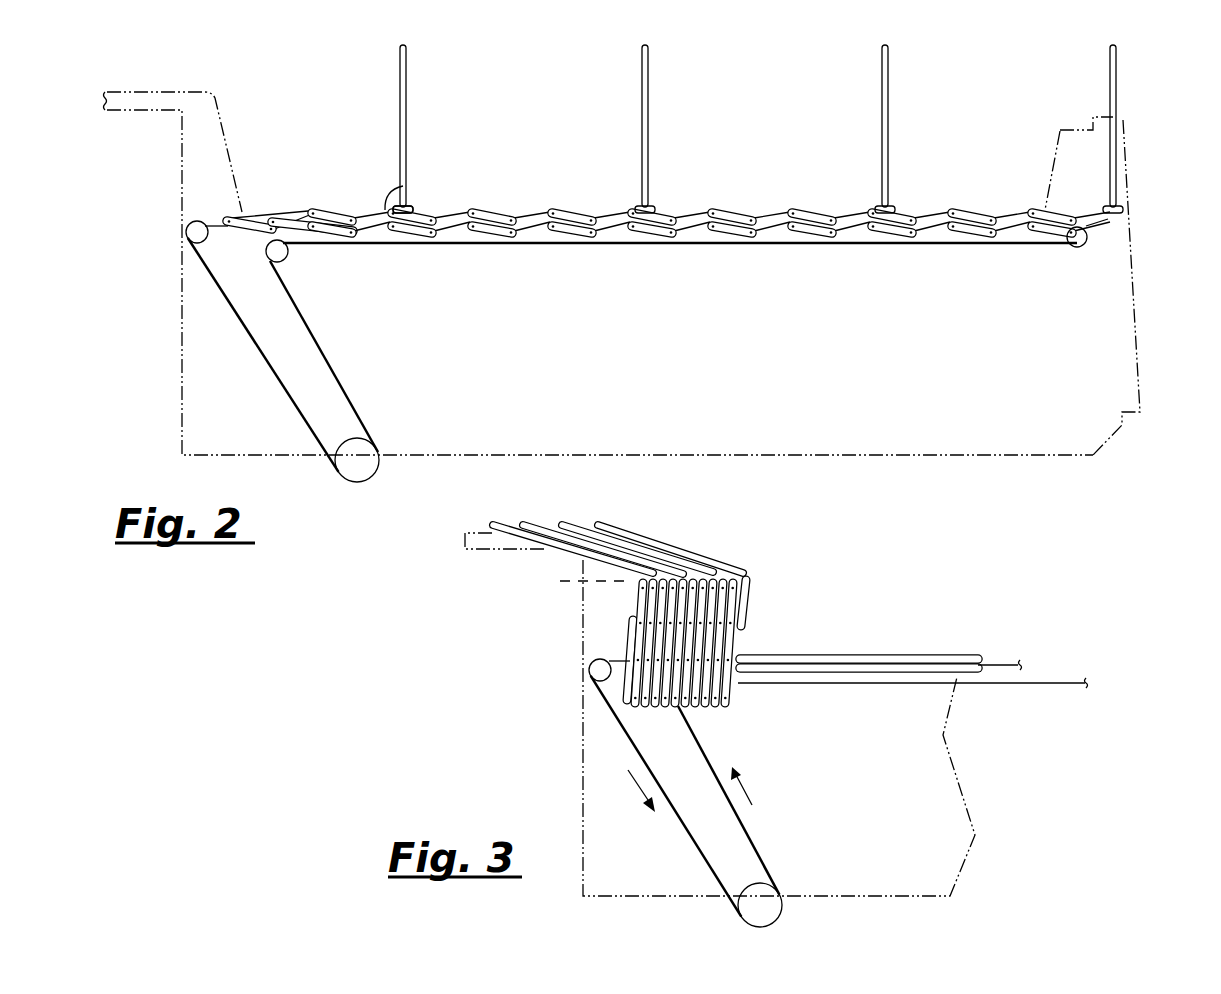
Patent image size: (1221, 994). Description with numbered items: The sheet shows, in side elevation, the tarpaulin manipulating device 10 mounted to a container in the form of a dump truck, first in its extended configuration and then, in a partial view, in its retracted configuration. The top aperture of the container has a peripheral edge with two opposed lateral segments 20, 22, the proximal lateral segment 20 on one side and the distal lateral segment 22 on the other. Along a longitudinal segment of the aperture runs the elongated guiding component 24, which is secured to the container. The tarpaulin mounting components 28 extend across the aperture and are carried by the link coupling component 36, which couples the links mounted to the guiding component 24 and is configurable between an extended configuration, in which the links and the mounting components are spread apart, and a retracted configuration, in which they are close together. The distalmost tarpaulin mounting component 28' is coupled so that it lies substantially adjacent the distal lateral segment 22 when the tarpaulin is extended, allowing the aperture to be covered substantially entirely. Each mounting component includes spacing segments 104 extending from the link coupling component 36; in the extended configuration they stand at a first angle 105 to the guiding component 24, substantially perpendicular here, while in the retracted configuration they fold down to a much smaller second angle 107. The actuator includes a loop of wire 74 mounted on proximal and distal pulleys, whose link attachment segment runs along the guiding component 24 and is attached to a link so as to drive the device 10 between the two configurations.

In FIG. 2, the device 10 is at (648, 256).
In FIG. 3, the device 10 is at (718, 604).
In FIG. 2, the lateral segment 20 is at (212, 90).
In FIG. 2, the distal lateral segment 22 is at (1125, 116).
In FIG. 3, the guiding component 24 is at (915, 655).
In FIG. 2, the tarpaulin mounting components 28 is at (674, 129).
In FIG. 2, the distalmost tarpaulin mounting component 28' is at (1079, 129).
In FIG. 2, the link coupling component 36 is at (745, 234).
In FIG. 3, the link coupling component 36 is at (755, 583).
In FIG. 2, the loop of wire 74 is at (333, 372).
In FIG. 3, the loop of wire 74 is at (707, 758).
In FIG. 2, the spacing segments 104 is at (405, 170).
In FIG. 3, the spacing segments 104 is at (548, 548).
In FIG. 2, the first angle 105 is at (378, 191).
In FIG. 3, the second angle 107 is at (576, 566).